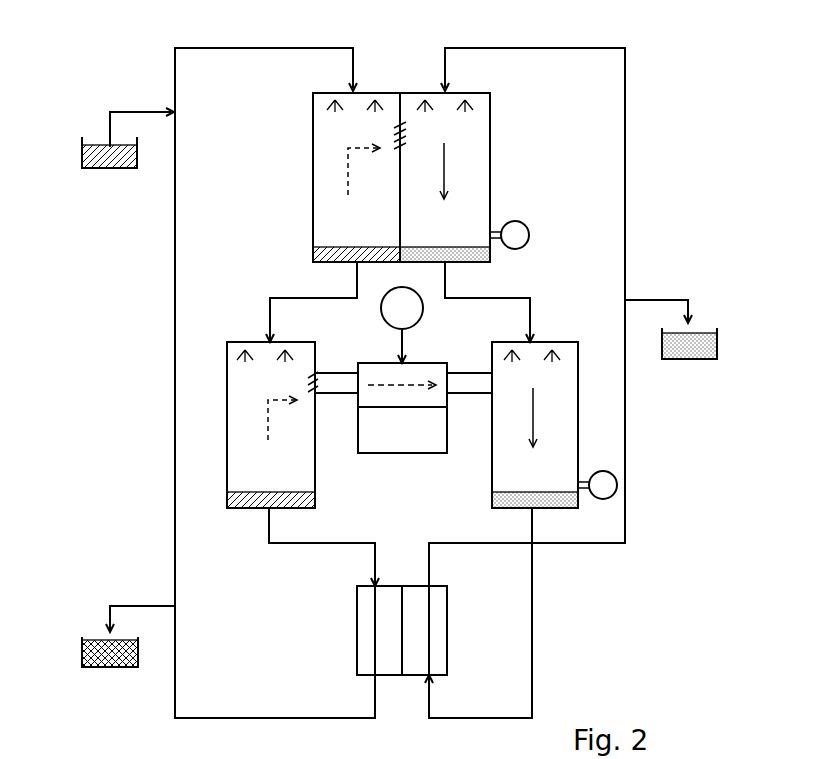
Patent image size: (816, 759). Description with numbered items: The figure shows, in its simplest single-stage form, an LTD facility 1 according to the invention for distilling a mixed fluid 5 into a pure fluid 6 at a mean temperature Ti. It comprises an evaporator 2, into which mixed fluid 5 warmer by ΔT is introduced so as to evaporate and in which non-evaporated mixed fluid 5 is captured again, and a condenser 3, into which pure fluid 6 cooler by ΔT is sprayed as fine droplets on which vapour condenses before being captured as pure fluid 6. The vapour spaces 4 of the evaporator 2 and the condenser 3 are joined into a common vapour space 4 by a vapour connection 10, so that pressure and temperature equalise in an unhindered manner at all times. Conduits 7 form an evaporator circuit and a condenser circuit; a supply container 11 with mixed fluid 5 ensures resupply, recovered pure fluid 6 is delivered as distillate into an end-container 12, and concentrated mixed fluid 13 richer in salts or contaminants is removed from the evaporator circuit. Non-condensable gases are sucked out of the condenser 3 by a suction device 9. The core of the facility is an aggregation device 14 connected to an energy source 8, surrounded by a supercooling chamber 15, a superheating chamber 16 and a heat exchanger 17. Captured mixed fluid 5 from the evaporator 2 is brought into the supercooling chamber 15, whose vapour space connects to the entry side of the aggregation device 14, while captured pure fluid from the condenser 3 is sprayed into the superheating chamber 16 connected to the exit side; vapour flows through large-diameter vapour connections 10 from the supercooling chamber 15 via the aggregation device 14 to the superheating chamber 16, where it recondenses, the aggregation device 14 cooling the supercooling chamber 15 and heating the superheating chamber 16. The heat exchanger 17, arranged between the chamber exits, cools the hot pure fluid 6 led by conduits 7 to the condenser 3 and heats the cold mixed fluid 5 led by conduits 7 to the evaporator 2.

The LTD facility 1 is at (136, 317).
The evaporator 2 is at (312, 175).
The condenser 3 is at (490, 180).
The vapour space 4 is at (471, 169).
The mixed fluid 5 is at (250, 495).
The pure fluid 6 is at (515, 498).
The conduits 7 is at (465, 715).
The energy source 8 is at (402, 308).
The suction device 9 is at (598, 474).
The vapour connection 10 is at (336, 372).
The supply container 11 is at (95, 168).
The end-container 12 is at (693, 358).
The thickened/concentrated mixed fluid 13 is at (95, 642).
The aggregation device 14 is at (402, 408).
The supercooling chamber 15 is at (227, 430).
The superheating chamber 16 is at (578, 430).
The heat exchanger 17 is at (348, 633).